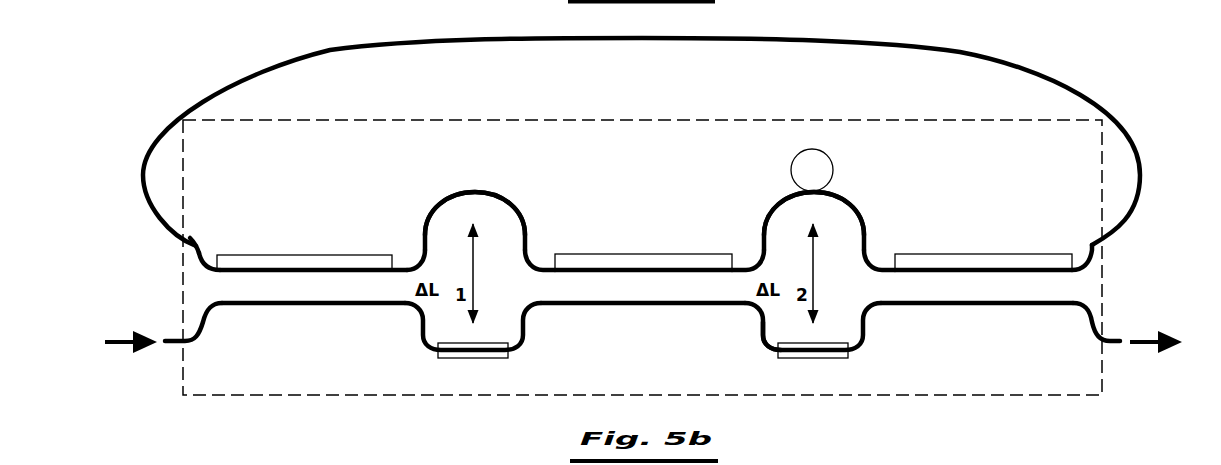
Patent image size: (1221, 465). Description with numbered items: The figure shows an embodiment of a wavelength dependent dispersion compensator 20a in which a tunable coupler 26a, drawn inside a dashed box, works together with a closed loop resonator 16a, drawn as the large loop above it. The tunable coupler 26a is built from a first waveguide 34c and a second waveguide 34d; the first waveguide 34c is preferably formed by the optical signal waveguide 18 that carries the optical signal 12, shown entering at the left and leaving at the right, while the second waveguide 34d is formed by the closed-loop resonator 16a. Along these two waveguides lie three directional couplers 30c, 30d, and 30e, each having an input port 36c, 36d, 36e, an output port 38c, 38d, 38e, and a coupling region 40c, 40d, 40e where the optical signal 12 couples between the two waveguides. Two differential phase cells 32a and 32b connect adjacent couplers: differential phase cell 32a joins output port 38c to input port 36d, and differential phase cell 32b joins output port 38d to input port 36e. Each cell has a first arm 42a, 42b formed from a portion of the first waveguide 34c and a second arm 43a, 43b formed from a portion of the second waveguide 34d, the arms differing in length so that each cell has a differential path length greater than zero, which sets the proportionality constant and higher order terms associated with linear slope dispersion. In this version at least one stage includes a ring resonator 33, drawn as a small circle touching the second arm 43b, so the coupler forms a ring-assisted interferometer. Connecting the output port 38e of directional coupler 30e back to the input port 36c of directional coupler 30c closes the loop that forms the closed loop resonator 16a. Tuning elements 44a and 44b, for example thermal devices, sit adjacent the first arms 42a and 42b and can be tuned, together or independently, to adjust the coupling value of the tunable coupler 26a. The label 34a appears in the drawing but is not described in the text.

The optical signal 12 is at (117, 335).
The closed loop resonator 16a is at (1091, 98).
The optical signal waveguide 18 is at (1112, 330).
The wavelength dependent dispersion compensator 20a is at (648, 130).
The tunable coupler 26a is at (328, 400).
The directional coupler 30c is at (290, 306).
The directional coupler 30d is at (618, 328).
The directional coupler 30e is at (977, 328).
The differential phase cell 32a is at (494, 191).
The differential phase cell 32b is at (839, 194).
The ring resonator 33 is at (793, 158).
The channel connection 34a is at (765, 344).
The first waveguide 34c is at (193, 340).
The second waveguide 34d is at (195, 235).
The input port 36c is at (205, 252).
The input port 36d is at (538, 257).
The input port 36e is at (880, 258).
The output port 38c is at (411, 252).
The output port 38d is at (753, 254).
The output port 38e is at (1082, 253).
The coupling region 40c is at (289, 254).
The coupling region 40d is at (636, 253).
The coupling region 40e is at (972, 254).
The first arm 42a is at (490, 346).
The first arm 42b is at (805, 346).
The second arm 43a is at (494, 191).
The second arm 43b is at (851, 196).
The tuning element 44a is at (497, 359).
The tuning element 44b is at (808, 359).